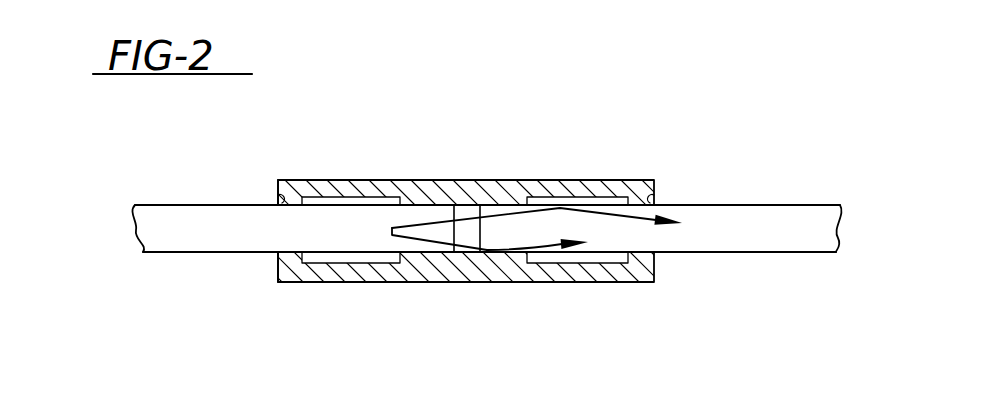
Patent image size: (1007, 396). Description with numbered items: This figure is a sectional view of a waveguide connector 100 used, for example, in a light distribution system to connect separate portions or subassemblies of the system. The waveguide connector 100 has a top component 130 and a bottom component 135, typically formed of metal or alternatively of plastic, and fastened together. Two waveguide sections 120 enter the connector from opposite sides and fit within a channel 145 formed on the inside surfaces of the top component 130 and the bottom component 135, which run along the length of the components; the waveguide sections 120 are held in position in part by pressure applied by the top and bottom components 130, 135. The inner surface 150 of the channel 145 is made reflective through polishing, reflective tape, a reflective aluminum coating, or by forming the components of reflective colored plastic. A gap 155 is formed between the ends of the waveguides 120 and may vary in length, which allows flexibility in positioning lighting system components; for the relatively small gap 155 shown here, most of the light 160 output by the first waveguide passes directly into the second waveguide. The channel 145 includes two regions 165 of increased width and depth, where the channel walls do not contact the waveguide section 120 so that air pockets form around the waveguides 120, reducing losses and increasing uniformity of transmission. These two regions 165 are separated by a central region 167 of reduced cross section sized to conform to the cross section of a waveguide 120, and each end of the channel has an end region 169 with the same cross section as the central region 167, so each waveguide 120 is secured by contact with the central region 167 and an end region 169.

The waveguide connector 100 is at (452, 165).
The waveguide section 120 is at (157, 218).
The top component 130 is at (288, 180).
The bottom component 135 is at (287, 274).
The channel 145 is at (276, 253).
The inner surface of channel 150 is at (466, 250).
The gap 155 is at (466, 212).
The light 160 is at (423, 240).
The region of increased width and depth 165 is at (362, 190).
The central region 167 is at (437, 248).
The end region 169 is at (278, 197).